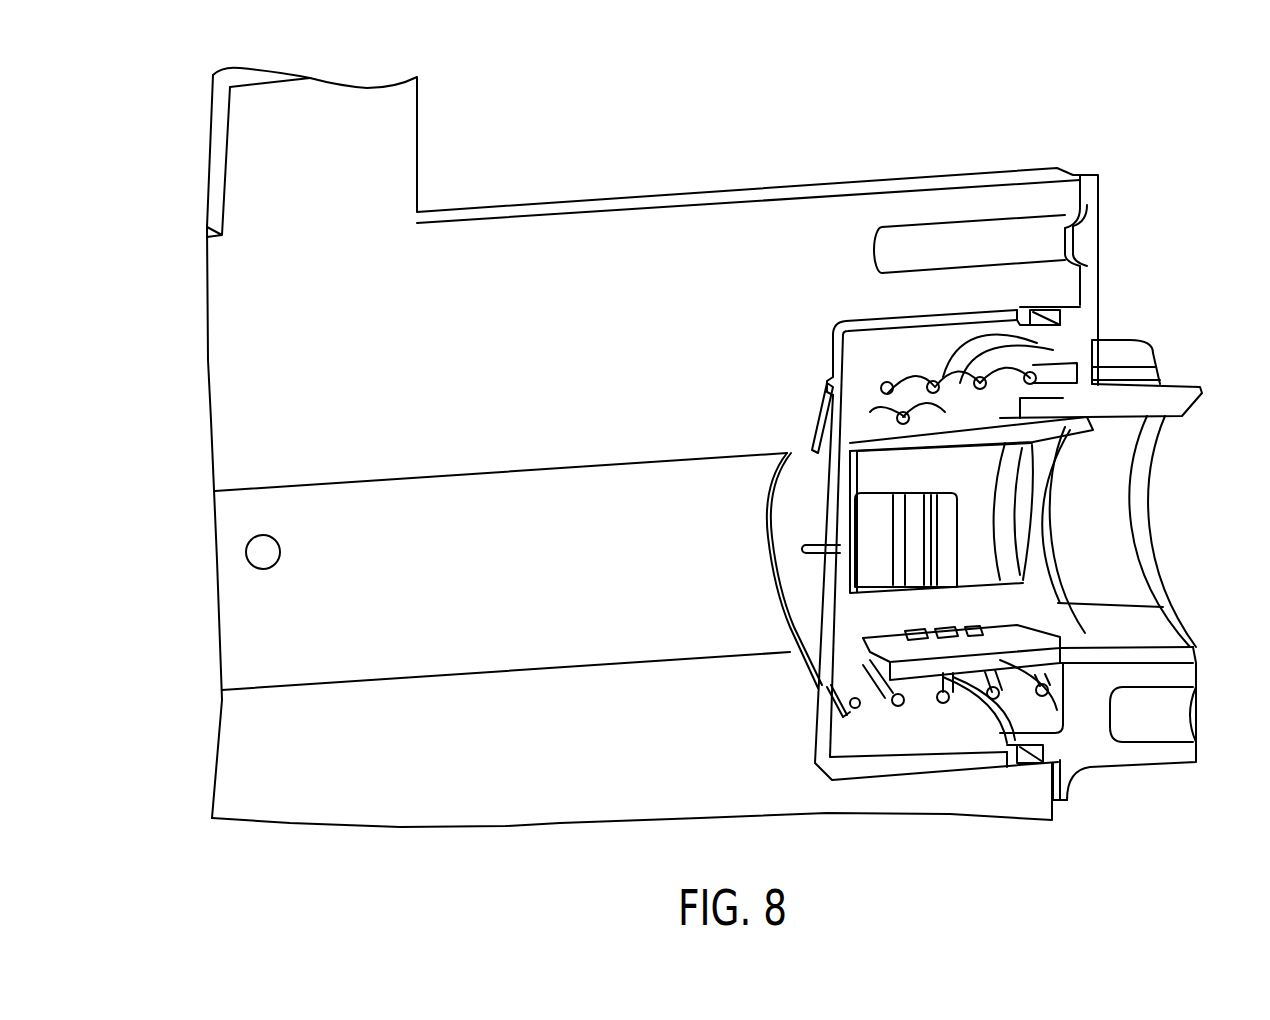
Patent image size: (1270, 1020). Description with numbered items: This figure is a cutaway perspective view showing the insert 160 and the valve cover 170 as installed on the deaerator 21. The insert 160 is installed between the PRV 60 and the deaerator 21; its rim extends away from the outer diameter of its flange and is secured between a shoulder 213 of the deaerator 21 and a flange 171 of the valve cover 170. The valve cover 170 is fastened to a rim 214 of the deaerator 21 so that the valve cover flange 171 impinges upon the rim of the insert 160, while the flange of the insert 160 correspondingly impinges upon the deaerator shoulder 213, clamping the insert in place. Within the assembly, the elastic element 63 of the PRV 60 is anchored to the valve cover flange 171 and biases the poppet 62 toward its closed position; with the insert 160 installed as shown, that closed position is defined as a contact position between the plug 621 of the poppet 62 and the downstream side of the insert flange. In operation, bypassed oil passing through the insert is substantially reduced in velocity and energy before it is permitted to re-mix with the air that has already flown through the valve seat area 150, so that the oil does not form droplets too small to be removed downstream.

The deaerator 21 is at (572, 793).
The PRV 60 is at (862, 614).
The poppet 62 is at (903, 620).
The elastic element 63 is at (1045, 688).
The valve seat area 150 is at (848, 710).
The insert 160 is at (796, 646).
The valve cover 170 is at (1138, 757).
The flange 171 is at (1075, 323).
The shoulder 213 is at (826, 383).
The rim 214 is at (1058, 193).
The plug 621 is at (873, 378).